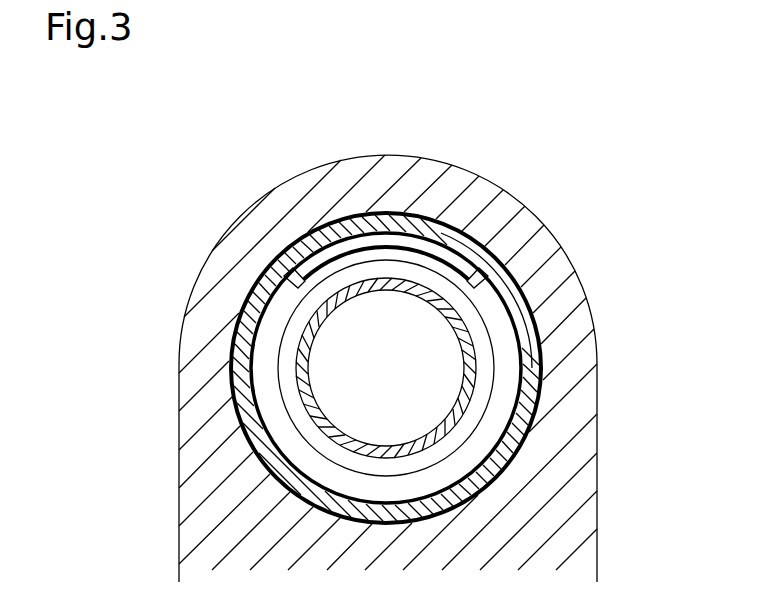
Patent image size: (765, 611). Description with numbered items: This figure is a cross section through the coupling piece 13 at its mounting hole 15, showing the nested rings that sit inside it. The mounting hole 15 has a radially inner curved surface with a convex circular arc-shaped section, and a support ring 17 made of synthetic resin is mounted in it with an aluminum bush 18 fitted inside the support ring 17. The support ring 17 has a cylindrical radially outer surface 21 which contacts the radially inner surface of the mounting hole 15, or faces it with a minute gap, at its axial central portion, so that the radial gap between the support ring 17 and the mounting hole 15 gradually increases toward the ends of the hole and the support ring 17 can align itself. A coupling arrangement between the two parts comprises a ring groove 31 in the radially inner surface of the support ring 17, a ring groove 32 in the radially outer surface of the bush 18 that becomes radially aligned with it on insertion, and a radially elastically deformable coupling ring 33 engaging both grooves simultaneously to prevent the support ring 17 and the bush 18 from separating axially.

The coupling piece 13 is at (285, 200).
The mounting hole 15 is at (343, 220).
The support ring 17 is at (267, 268).
The bush 18 is at (400, 285).
The cylindrical radially outer surface 21 is at (235, 327).
The ring groove 31 is at (440, 250).
The ring groove 32 is at (477, 320).
The coupling ring 33 is at (510, 368).